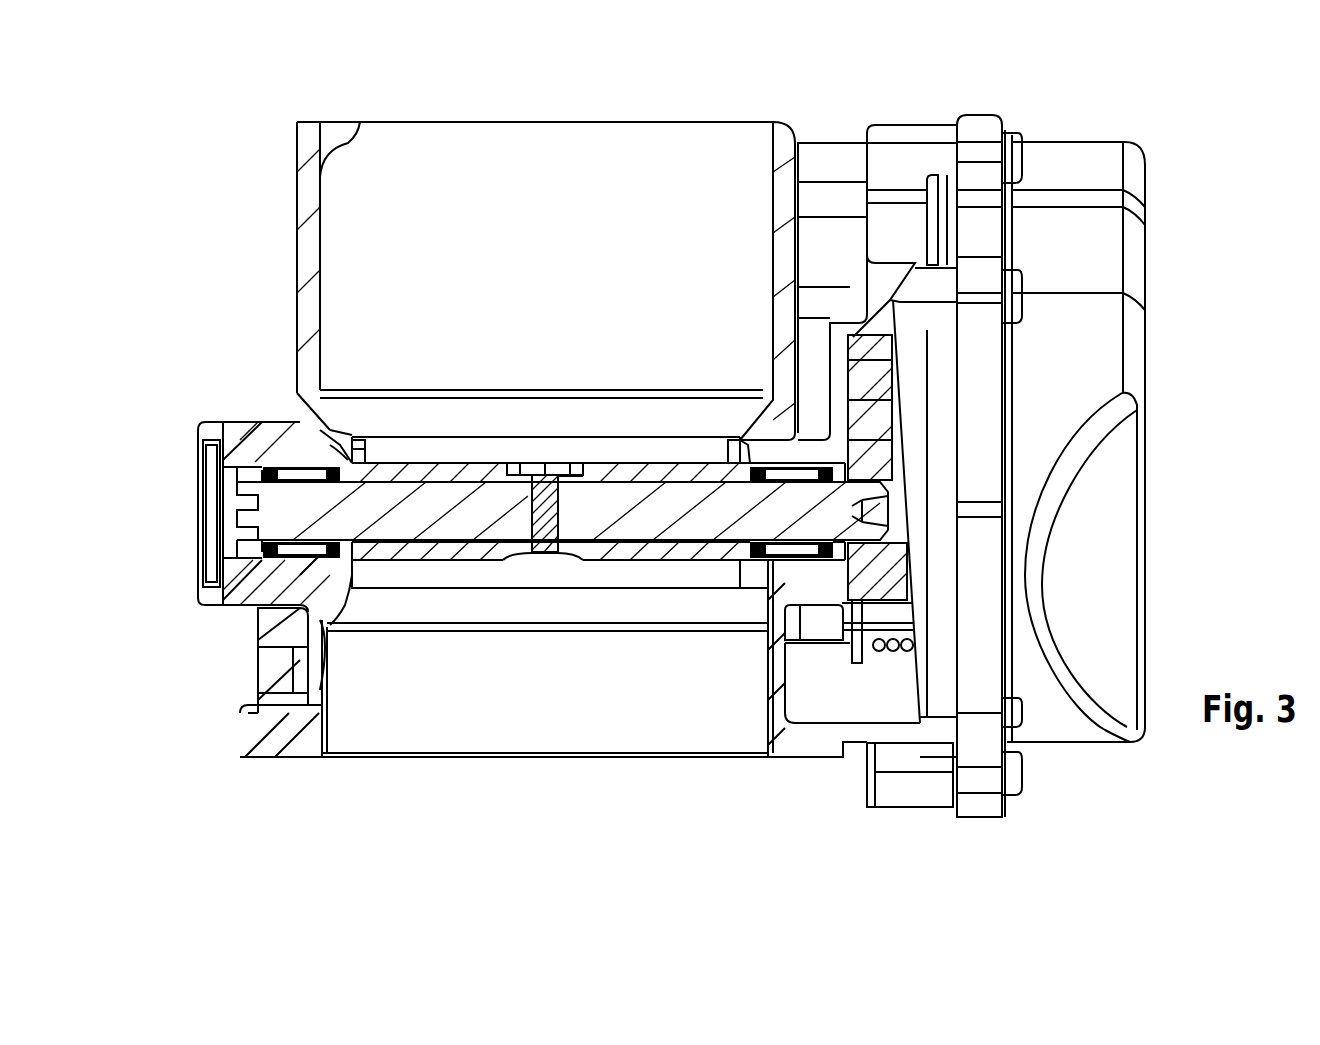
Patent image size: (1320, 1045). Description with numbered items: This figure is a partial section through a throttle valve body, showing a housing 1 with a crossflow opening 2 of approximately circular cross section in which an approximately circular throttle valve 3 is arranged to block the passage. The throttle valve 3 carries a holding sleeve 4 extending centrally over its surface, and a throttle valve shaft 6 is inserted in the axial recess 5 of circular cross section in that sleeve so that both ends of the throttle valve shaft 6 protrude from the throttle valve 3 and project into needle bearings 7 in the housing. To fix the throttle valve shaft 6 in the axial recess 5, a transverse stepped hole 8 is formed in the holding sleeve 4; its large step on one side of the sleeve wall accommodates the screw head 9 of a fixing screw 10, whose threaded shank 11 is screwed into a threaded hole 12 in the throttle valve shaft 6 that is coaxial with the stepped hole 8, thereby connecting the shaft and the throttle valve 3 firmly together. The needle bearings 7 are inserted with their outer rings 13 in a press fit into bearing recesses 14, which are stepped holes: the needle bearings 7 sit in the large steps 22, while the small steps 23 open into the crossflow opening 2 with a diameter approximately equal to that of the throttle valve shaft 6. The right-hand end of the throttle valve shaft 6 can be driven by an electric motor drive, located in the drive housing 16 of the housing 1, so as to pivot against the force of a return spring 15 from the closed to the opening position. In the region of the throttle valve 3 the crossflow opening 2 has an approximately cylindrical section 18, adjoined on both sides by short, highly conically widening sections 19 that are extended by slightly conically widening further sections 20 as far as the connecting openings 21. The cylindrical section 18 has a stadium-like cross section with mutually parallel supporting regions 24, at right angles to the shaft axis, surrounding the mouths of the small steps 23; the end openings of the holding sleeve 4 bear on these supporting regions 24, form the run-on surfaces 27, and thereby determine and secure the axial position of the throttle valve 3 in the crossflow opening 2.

The housing 1 is at (222, 593).
The crossflow opening 2 is at (680, 140).
The throttle valve 3 is at (420, 468).
The holding sleeve 4 is at (470, 470).
The axial recess 5 is at (397, 562).
The throttle valve shaft 6 is at (438, 517).
The needle bearings 7 is at (236, 600).
The stepped hole 8 is at (518, 558).
The screw head 9 is at (562, 478).
The fixing screw 10 is at (538, 468).
The threaded shank 11 is at (578, 470).
The threaded hole 12 is at (563, 556).
The outer rings 13 is at (285, 468).
The bearing recesses 14 is at (235, 553).
The return spring 15 is at (903, 650).
The drive housing 16 is at (1100, 495).
The approximately cylindrical section 18 is at (353, 565).
The fillet 19 is at (335, 452).
The slightly conically widening further sections 20 is at (330, 178).
The connecting openings 21 is at (560, 120).
The large steps 22 is at (235, 470).
The small steps 23 is at (290, 625).
The supporting regions 24 is at (367, 450).
The run-on surfaces 27 is at (337, 470).